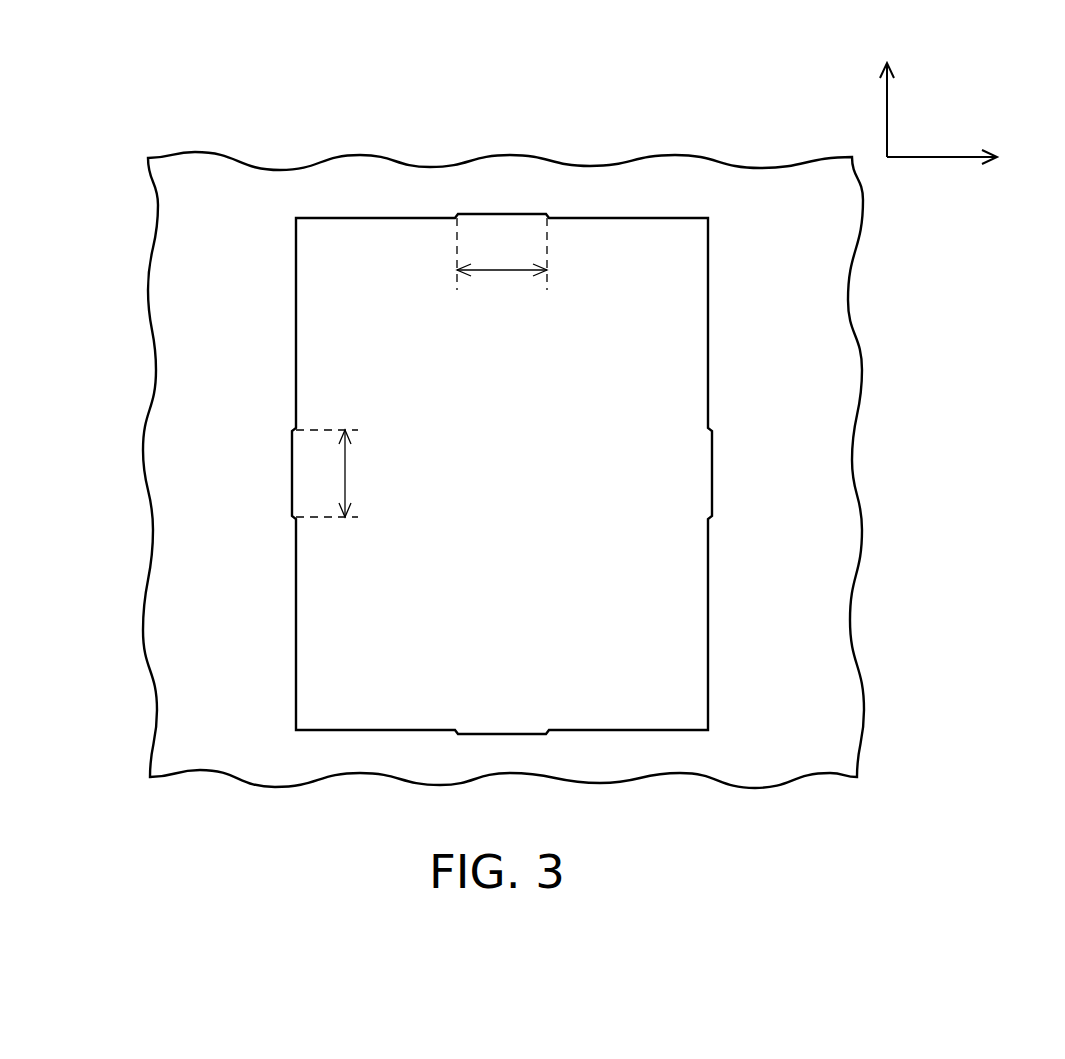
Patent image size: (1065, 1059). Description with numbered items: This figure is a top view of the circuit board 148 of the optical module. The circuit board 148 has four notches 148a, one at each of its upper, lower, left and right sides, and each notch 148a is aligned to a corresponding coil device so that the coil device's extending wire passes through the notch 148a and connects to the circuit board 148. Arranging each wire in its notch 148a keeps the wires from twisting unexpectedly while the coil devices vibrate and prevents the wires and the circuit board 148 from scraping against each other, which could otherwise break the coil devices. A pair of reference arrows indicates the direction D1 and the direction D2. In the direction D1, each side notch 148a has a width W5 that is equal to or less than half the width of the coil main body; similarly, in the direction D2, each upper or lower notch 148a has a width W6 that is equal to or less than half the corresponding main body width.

The circuit board 148 is at (862, 688).
The notch 148a is at (470, 212).
The width of notch in direction D1 W5 is at (340, 473).
The width of notch in direction D2 W6 is at (502, 264).
The direction D1 is at (885, 94).
The direction D2 is at (959, 162).